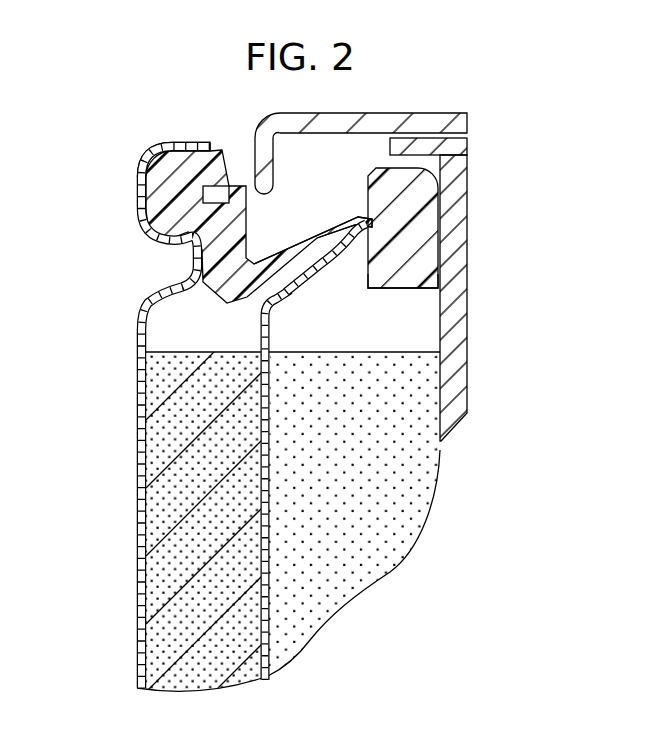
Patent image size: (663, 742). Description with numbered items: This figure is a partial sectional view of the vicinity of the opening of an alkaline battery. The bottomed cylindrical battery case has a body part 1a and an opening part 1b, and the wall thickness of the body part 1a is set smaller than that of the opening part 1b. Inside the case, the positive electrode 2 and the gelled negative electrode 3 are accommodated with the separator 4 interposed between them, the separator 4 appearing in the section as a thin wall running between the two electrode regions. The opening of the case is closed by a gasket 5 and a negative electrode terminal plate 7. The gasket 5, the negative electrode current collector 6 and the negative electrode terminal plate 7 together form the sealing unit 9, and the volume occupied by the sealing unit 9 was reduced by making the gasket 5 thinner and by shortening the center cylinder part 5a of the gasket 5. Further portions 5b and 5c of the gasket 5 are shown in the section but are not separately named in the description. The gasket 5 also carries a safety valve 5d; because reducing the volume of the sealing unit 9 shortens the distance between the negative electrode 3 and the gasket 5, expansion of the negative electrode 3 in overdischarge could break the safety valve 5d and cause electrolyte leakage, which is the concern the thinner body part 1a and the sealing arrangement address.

The body part 1a is at (139, 540).
The opening part 1b is at (190, 141).
The positive electrode 2 is at (139, 456).
The gelled negative electrode 3 is at (390, 572).
The separator 4 is at (270, 597).
The gasket 5 is at (428, 218).
The center cylinder part 5a is at (403, 290).
The gasket thin lip portion 5b is at (317, 279).
The gasket upper portion within crimp 5c is at (158, 192).
The safety valve 5d is at (370, 222).
The negative electrode current collector 6 is at (468, 273).
The negative electrode terminal plate 7 is at (468, 124).
The sealing unit 9 is at (404, 277).